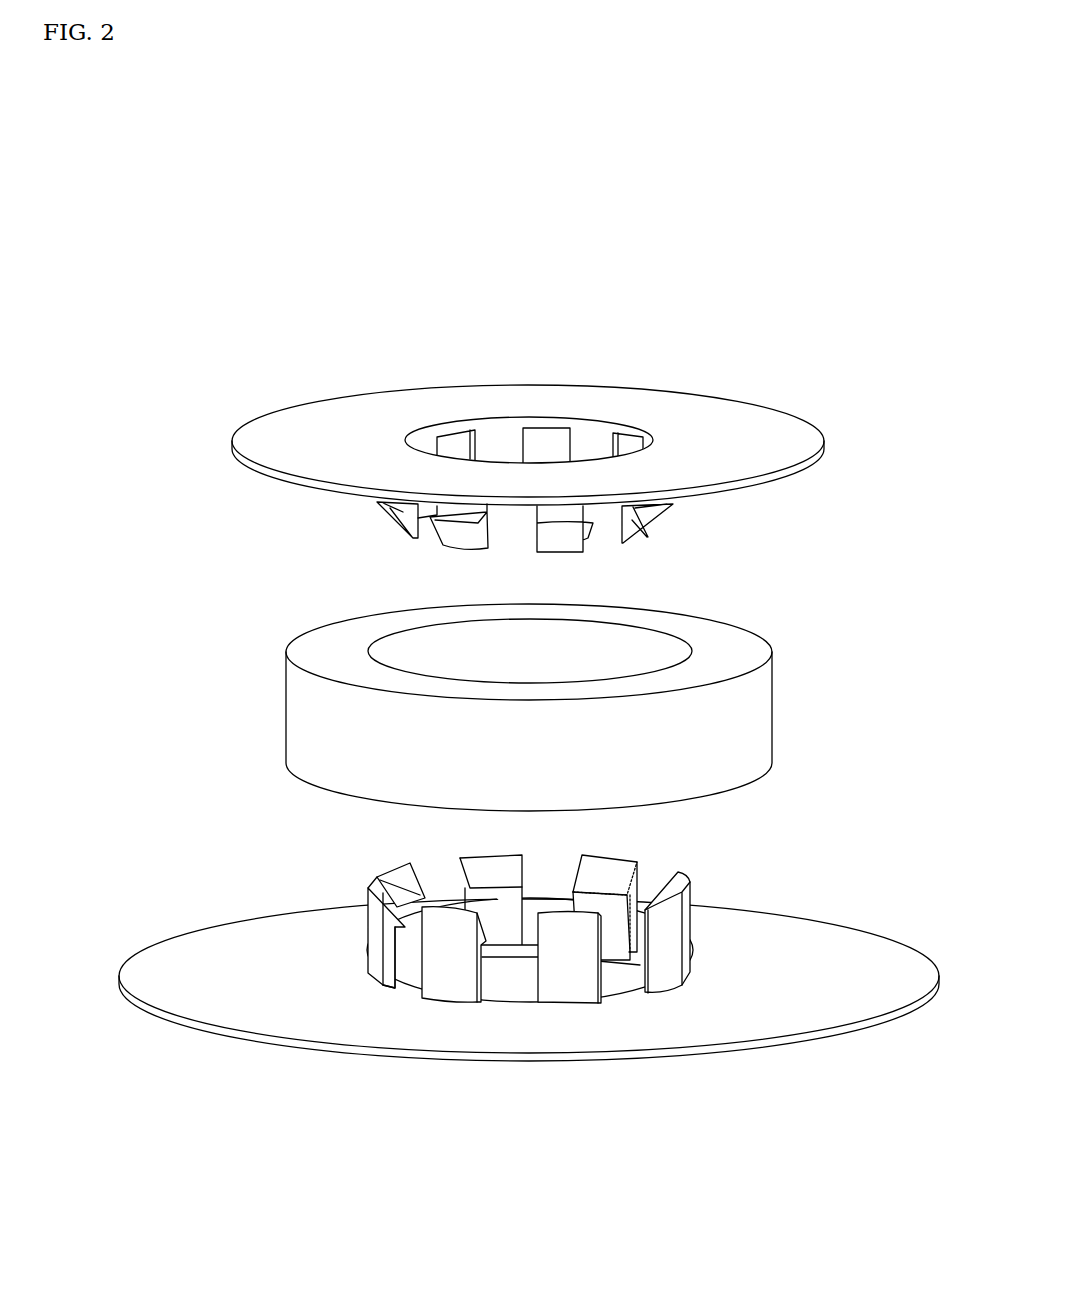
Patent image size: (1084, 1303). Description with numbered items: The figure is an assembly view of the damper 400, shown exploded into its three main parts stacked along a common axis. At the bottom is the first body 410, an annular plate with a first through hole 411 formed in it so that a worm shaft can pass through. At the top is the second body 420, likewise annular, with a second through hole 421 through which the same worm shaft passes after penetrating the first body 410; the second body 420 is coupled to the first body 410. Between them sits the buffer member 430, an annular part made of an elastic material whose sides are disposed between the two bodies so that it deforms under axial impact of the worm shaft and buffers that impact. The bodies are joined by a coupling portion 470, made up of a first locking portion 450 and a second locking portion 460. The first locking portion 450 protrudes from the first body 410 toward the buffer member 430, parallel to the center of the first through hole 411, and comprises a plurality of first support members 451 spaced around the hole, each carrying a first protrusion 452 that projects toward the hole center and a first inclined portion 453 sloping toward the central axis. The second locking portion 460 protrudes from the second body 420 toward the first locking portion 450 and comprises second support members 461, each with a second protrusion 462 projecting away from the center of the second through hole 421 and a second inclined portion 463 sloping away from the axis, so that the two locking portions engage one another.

The damper 400 is at (205, 120).
The first body 410 is at (825, 933).
The first through hole 411 is at (516, 986).
The second body 420 is at (783, 427).
The second through hole 421 is at (553, 442).
The buffer member 430 is at (755, 713).
The first locking portion 450 is at (363, 1128).
The first support member 451 is at (390, 960).
The first protrusion 452 is at (397, 923).
The first inclined portion 453 is at (403, 885).
The second locking portion 460 is at (878, 500).
The second support member 461 is at (575, 515).
The second protrusion 462 is at (632, 517).
The second inclined portion 463 is at (643, 537).
The coupling portion 470 is at (957, 1182).